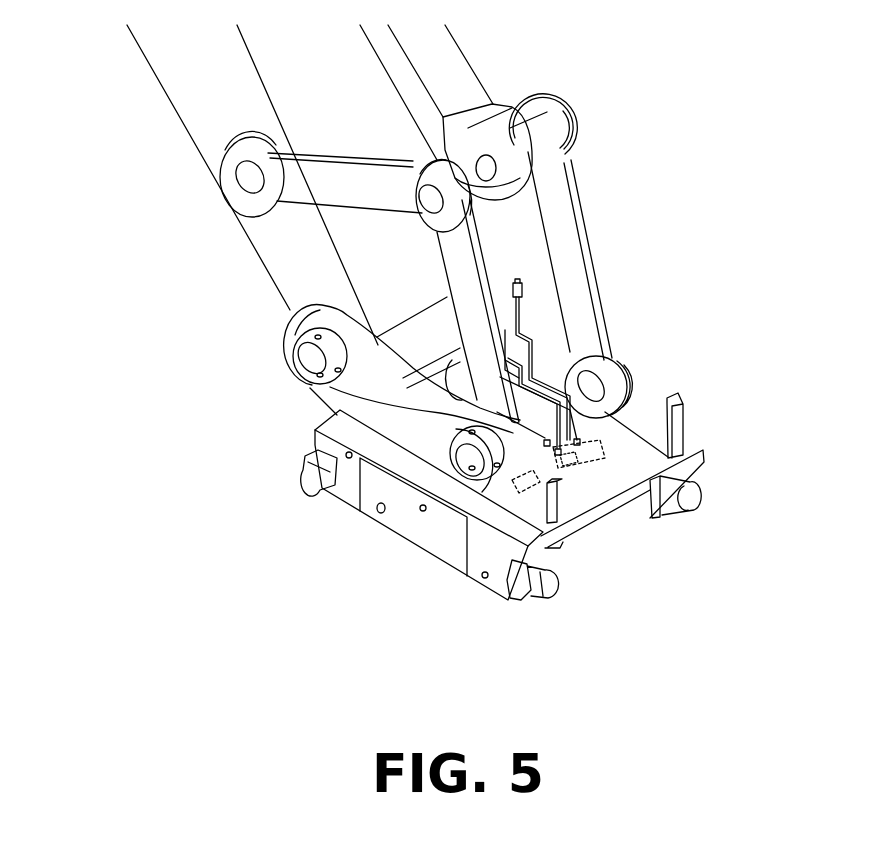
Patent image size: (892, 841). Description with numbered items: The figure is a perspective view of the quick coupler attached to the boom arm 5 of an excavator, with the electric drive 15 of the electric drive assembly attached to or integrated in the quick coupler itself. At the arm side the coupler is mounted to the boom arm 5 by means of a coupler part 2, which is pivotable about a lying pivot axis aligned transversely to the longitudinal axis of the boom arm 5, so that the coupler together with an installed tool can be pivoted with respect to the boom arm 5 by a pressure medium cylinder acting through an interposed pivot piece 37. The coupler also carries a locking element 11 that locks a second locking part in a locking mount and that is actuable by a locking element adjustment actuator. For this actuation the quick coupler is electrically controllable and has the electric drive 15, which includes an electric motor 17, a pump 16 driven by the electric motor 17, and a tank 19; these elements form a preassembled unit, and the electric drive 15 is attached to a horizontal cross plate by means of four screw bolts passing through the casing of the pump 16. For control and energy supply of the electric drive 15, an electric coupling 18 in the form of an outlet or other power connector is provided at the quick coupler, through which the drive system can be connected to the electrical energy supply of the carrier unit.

The coupler part 2 is at (270, 332).
The boom arm 5 is at (170, 63).
The locking element 11 is at (550, 585).
The electric drive 15 is at (612, 468).
The pump 16 is at (560, 468).
The electric motor 17 is at (520, 487).
The electric coupling 18 is at (520, 286).
The tank 19 is at (597, 443).
The pivot piece 37 is at (380, 187).